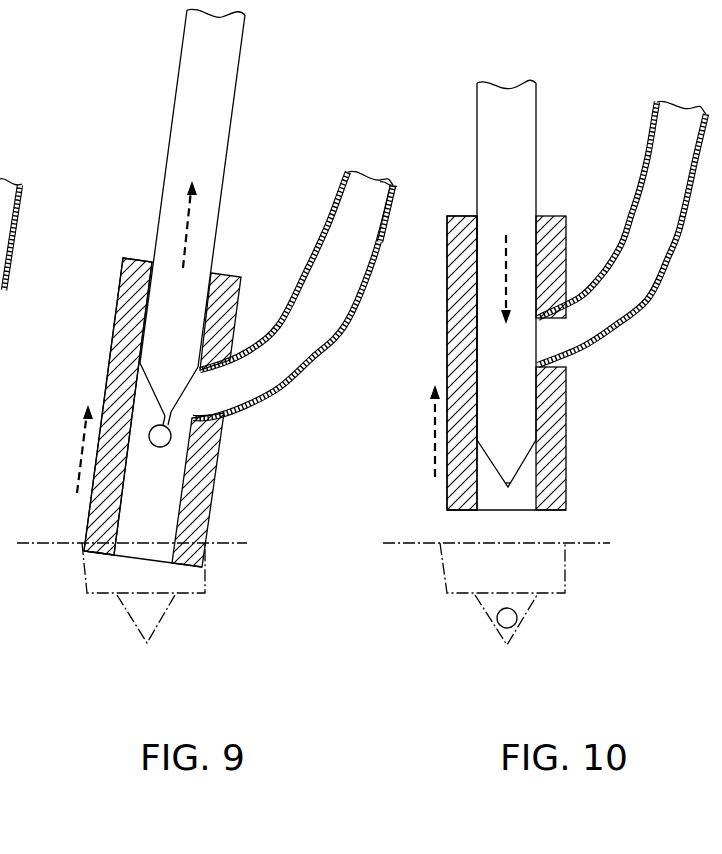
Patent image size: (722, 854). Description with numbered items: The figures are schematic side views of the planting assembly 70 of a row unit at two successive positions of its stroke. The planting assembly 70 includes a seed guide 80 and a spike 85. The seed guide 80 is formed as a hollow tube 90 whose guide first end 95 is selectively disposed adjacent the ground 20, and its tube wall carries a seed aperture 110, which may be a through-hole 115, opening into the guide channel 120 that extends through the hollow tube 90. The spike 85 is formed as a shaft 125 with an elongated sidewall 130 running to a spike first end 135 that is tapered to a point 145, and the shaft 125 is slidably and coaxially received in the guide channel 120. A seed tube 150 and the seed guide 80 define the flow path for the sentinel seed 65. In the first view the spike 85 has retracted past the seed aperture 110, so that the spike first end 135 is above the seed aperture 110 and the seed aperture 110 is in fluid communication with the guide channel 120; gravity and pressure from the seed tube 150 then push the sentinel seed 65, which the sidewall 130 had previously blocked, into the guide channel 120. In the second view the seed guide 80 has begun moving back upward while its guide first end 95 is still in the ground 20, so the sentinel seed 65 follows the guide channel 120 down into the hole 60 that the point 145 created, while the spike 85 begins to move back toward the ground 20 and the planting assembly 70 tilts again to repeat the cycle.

In FIG. 9, the ground 20 is at (55, 543).
In FIG. 10, the ground 20 is at (420, 543).
In FIG. 9, the hole 60 is at (130, 623).
In FIG. 10, the hole 60 is at (477, 623).
In FIG. 9, the sentinel seed 65 is at (160, 437).
In FIG. 10, the sentinel seed 65 is at (507, 618).
In FIG. 9, the planting assembly 70 is at (48, 445).
In FIG. 10, the planting assembly 70 is at (392, 434).
In FIG. 9, the seed guide 80 is at (138, 293).
In FIG. 10, the seed guide 80 is at (462, 320).
In FIG. 9, the spike 85 is at (205, 123).
In FIG. 10, the spike 85 is at (503, 183).
In FIG. 9, the hollow tube 90 is at (125, 340).
In FIG. 10, the hollow tube 90 is at (447, 352).
In FIG. 9, the guide first end 95 is at (182, 566).
In FIG. 10, the guide first end 95 is at (553, 512).
In FIG. 9, the seed aperture 110 is at (213, 378).
In FIG. 10, the seed aperture 110 is at (547, 338).
In FIG. 9, the through-hole 115 is at (215, 366).
In FIG. 10, the through-hole 115 is at (548, 316).
In FIG. 9, the guide channel 120 is at (148, 502).
In FIG. 10, the guide channel 120 is at (527, 467).
In FIG. 9, the shaft 125 is at (200, 98).
In FIG. 10, the shaft 125 is at (500, 130).
In FIG. 9, the sidewall 130 is at (173, 150).
In FIG. 10, the sidewall 130 is at (480, 147).
In FIG. 9, the spike first end 135 is at (170, 364).
In FIG. 10, the spike first end 135 is at (495, 428).
In FIG. 9, the point 145 is at (172, 420).
In FIG. 10, the point 145 is at (508, 488).
In FIG. 10, the seed tube 150 is at (640, 168).